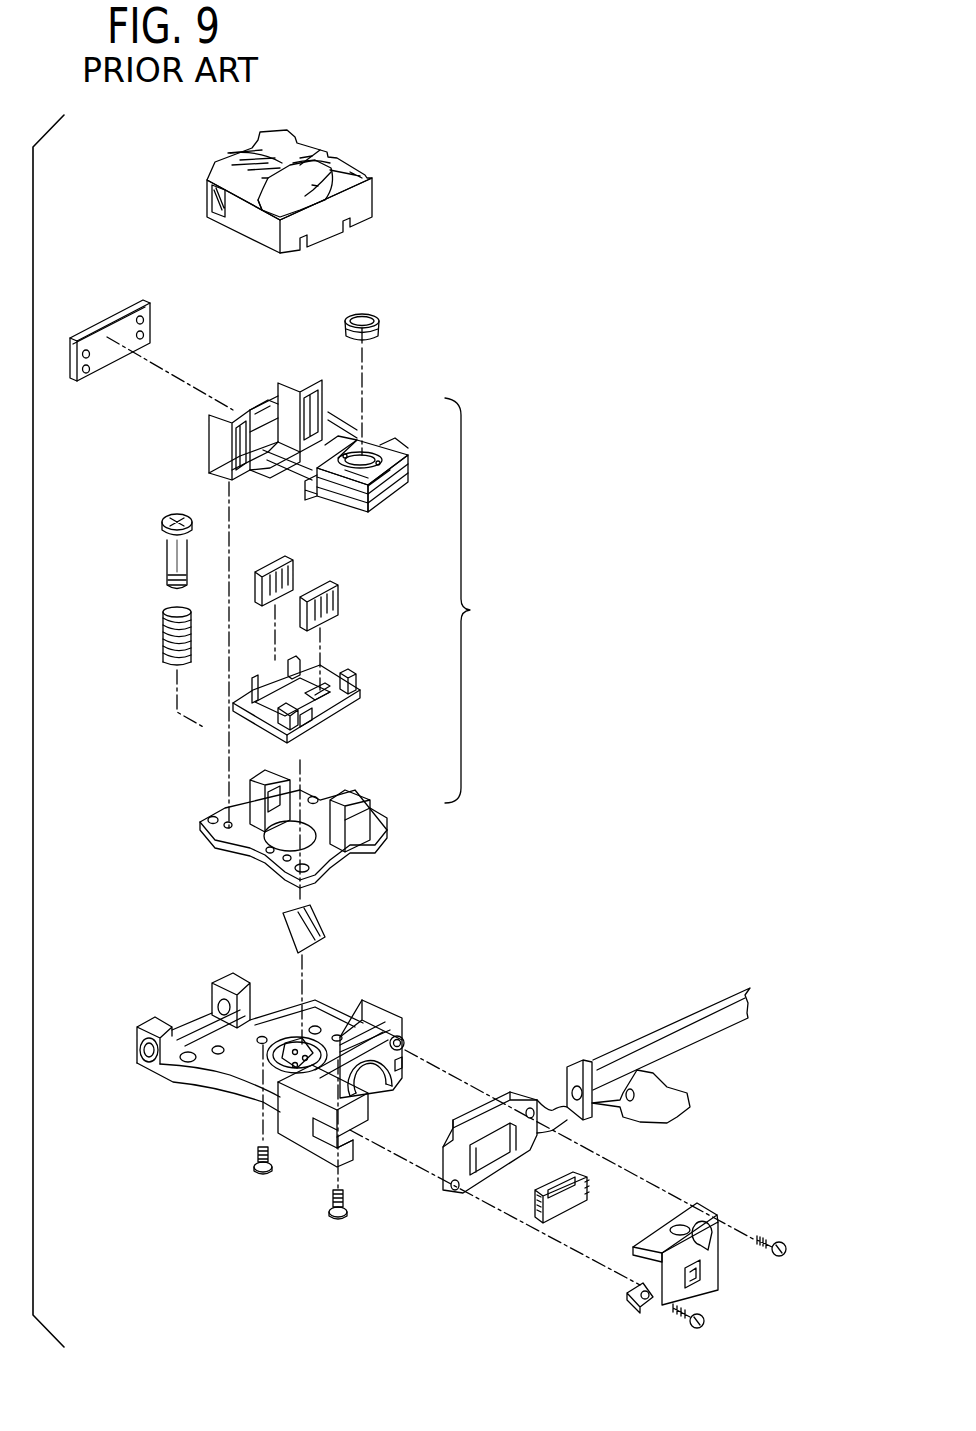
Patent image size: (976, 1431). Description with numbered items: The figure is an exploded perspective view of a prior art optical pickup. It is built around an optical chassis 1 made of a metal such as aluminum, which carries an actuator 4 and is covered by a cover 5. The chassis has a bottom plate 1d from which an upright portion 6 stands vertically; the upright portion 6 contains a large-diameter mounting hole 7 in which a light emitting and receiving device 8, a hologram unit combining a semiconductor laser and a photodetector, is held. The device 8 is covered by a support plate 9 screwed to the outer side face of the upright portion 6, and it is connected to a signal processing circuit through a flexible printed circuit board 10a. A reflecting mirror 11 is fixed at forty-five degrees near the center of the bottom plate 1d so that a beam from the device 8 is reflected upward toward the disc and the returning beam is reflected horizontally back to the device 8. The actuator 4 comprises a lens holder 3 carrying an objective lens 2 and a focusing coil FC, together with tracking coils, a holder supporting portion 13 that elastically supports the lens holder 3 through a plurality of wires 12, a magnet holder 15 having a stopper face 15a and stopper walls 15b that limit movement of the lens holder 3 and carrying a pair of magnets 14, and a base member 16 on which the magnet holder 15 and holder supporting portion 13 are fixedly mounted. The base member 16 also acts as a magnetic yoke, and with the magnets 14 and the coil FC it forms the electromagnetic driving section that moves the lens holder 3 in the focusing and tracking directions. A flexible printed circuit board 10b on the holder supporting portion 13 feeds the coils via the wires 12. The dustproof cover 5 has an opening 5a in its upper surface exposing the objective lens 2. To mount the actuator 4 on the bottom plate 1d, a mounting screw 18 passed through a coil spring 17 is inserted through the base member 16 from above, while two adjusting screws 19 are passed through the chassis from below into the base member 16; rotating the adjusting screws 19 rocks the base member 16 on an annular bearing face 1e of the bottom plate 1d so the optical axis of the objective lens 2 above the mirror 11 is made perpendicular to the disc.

The optical chassis 1 is at (218, 1106).
The bottom plate 1d is at (285, 1020).
The annular bearing face 1e is at (330, 1035).
The objective lens 2 is at (379, 322).
The lens holder 3 is at (400, 450).
The actuator 4 is at (500, 623).
The cover 5 is at (378, 186).
The opening 5a is at (303, 188).
The upright portion 6 is at (405, 1018).
The mounting hole 7 is at (372, 1098).
The light emitting and receiving device 8 is at (565, 1200).
The support plate 9 is at (715, 1215).
The flexible printed circuit board 10a is at (578, 1065).
The flexible printed circuit board 10b is at (114, 320).
The reflecting mirror 11 is at (322, 930).
The wires 12 is at (300, 466).
The holder supporting portion 13 is at (218, 421).
The magnets 14 is at (290, 560).
The magnet holder 15 is at (365, 694).
The stopper face 15a is at (322, 712).
The stopper walls 15b is at (355, 676).
The base member 16 is at (372, 812).
The coil spring 17 is at (165, 636).
The mounting screw 18 is at (172, 560).
The adjusting screws 19 is at (262, 1180).
The focusing coil FC is at (380, 490).